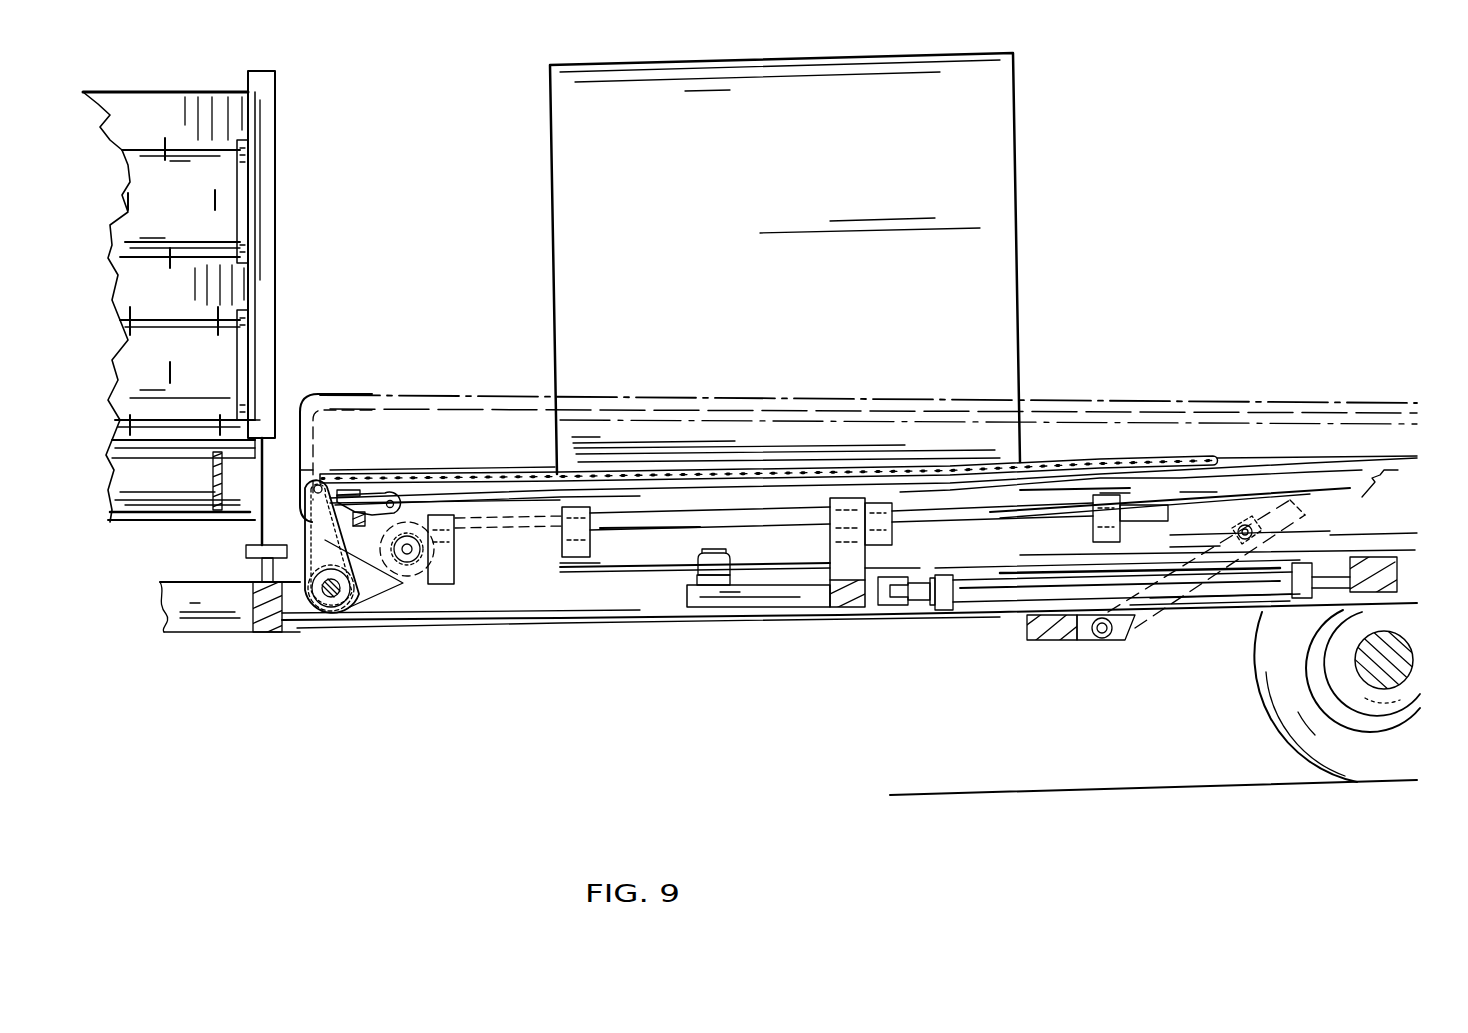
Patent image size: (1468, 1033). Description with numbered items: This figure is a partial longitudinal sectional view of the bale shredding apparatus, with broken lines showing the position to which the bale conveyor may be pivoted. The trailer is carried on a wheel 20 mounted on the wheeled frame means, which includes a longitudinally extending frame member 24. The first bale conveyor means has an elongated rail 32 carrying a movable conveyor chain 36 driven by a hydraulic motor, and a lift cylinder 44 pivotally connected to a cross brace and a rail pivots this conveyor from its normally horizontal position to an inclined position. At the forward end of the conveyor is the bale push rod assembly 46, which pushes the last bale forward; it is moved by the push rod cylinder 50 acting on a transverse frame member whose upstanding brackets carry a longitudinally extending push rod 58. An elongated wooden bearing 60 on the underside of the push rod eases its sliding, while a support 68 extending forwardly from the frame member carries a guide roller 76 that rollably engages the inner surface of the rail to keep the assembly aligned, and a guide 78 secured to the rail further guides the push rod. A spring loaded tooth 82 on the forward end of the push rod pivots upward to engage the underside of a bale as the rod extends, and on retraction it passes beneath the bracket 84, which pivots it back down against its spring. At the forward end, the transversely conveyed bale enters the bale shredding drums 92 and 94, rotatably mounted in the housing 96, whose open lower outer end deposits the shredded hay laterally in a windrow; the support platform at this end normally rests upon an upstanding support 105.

The wheel 20 is at (1262, 695).
The longitudinally extending frame member 24 is at (380, 612).
The rail 32 is at (1243, 466).
The conveyor chain 36 is at (1118, 455).
The lift cylinder 44 is at (1140, 622).
The bale push rod assembly 46 is at (888, 555).
The push rod cylinder 50 is at (1003, 600).
The push rod 58 is at (525, 503).
The wooden bearing 60 is at (1048, 512).
The support 68 is at (787, 590).
The guide roller 76 is at (698, 568).
The guide 78 is at (450, 568).
The spring loaded tooth 82 is at (374, 500).
The bracket 84 is at (340, 490).
The bale shredding drum 92 is at (212, 354).
The bale shredding drum 94 is at (218, 180).
The housing 96 is at (288, 113).
The upstanding support 105 is at (257, 573).